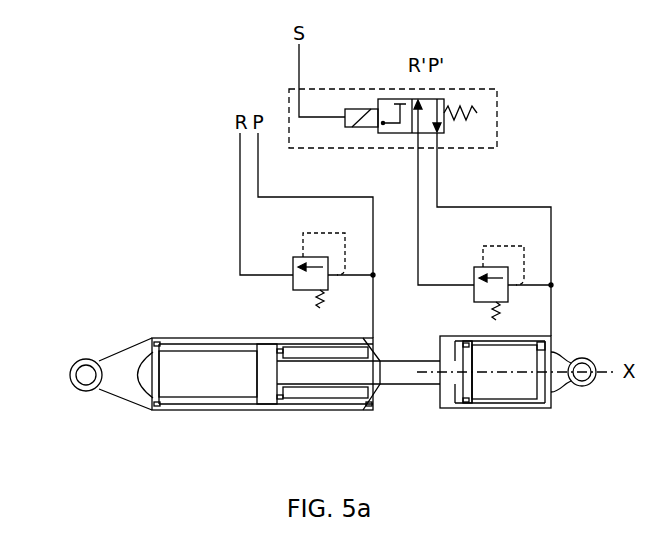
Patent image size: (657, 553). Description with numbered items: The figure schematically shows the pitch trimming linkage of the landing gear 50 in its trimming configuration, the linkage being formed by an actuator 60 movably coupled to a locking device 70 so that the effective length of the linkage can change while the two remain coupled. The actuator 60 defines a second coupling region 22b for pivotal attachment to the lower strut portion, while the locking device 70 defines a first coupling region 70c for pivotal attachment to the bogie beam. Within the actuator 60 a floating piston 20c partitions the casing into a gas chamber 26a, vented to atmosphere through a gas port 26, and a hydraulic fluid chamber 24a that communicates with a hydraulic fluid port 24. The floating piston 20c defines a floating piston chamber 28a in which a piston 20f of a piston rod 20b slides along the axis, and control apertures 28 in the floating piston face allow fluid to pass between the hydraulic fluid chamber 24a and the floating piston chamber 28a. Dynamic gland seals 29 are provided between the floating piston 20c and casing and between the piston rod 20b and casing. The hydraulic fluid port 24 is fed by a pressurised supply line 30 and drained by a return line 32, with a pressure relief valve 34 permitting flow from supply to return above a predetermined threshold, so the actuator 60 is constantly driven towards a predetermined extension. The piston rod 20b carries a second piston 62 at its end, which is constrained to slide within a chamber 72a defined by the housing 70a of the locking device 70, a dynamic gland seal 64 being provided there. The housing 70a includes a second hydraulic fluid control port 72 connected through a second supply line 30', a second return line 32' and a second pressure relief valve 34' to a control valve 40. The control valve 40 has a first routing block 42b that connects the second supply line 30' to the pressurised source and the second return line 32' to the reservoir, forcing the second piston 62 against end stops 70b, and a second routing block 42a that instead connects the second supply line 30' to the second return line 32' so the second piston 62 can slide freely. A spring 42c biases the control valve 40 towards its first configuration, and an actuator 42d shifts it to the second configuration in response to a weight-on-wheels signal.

The control valve 40 is at (508, 104).
The landing gear 50 is at (556, 136).
The second routing block 42a is at (393, 99).
The first routing block 42b is at (433, 100).
The spring 42c is at (457, 114).
The actuator 42d is at (362, 109).
The pressurised supply line 30 is at (321, 235).
The second supply line 30' is at (494, 234).
The return line 32 is at (285, 205).
The second return line 32' is at (485, 210).
The pressure relief valve 34 is at (295, 273).
The pressure relief valve 34' is at (469, 283).
The actuator 60 is at (88, 334).
The locking device 70 is at (590, 334).
The second coupling region 22b is at (71, 368).
The gas port 26 is at (145, 350).
The gas chamber 26a is at (141, 389).
The floating piston 20c is at (248, 408).
The dynamic gland seal 29 is at (157, 342).
The floating piston chamber 28a is at (197, 392).
The control apertures 28 is at (283, 399).
The piston 20f is at (250, 372).
The hydraulic fluid chamber 24a is at (337, 398).
The hydraulic fluid port 24 is at (366, 346).
The piston rod 20b is at (406, 377).
The end stops 70b is at (448, 404).
The second piston 62 is at (476, 392).
The dynamic gland seal 64 is at (465, 403).
The chamber 72a is at (527, 397).
The second hydraulic fluid control port 72 is at (541, 342).
The housing 70a is at (559, 387).
The first coupling region 70c is at (591, 377).